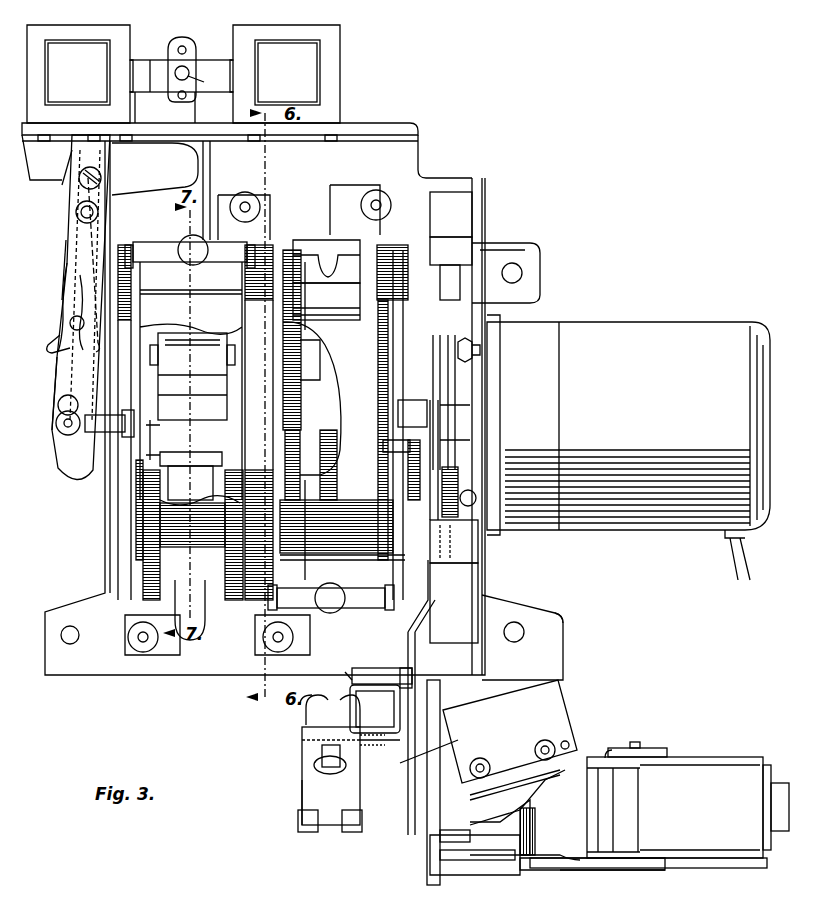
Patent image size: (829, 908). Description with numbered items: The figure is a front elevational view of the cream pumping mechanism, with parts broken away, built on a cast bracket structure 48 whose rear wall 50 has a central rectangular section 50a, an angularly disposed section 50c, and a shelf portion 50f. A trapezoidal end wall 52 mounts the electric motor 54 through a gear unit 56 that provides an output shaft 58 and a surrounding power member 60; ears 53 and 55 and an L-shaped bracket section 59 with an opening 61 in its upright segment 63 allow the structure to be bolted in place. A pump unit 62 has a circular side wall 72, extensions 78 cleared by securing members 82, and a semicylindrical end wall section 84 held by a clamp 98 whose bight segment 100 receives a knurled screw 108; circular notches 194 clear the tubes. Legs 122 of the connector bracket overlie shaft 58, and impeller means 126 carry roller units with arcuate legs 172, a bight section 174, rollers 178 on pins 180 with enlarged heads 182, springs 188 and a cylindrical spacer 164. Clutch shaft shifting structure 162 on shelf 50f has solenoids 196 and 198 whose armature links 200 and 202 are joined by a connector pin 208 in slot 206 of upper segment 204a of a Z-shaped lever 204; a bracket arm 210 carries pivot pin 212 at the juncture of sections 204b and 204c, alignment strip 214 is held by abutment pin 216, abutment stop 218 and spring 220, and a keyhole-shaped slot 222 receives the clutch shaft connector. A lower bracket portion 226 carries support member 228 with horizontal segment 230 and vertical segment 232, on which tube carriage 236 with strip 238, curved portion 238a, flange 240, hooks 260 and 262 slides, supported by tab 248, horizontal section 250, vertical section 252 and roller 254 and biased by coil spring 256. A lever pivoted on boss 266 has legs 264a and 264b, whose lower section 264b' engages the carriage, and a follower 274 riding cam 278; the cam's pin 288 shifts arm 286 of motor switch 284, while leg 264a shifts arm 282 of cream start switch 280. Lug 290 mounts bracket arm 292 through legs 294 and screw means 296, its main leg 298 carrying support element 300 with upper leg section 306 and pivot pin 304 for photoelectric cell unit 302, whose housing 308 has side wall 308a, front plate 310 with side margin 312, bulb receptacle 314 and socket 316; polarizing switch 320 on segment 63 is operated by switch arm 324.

The bracket structure 48 is at (420, 145).
The rear wall 50 is at (470, 293).
The central rectangular section 50a is at (390, 447).
The angularly disposed section 50c is at (400, 548).
The shelf portion 50f is at (226, 141).
The end wall 52 is at (480, 548).
The ear 53 is at (60, 680).
The electric motor 54 is at (662, 328).
The ear 55 is at (515, 245).
The gear unit 56 is at (555, 328).
The output shaft 58 is at (450, 430).
The L-shaped bracket section 59 is at (568, 652).
The power member 60 is at (470, 410).
The opening 61 is at (520, 625).
The pump unit 62 is at (140, 528).
The upright segment 63 is at (555, 625).
The circular side wall 72 is at (135, 552).
The upwardly projecting extension 78 is at (262, 198).
The securing member 82 is at (258, 208).
The semicylindrical end wall section 84 is at (193, 535).
The clamp 98 is at (168, 245).
The main bight segment 100 is at (163, 262).
The screw 108 is at (210, 262).
The leg 122 is at (398, 410).
The impeller means 126 is at (461, 903).
The clutch shaft shifting structure 162 is at (64, 235).
The cylindrical spacer 164 is at (262, 440).
The arcuate leg 172 is at (232, 372).
The bight section 174 is at (100, 497).
The roller 178 is at (192, 376).
The pin 180 is at (150, 462).
The enlarged head 182 is at (172, 322).
The spring 188 is at (225, 462).
The circular notch 194 is at (322, 244).
The solenoid 196 is at (338, 27).
The solenoid 198 is at (122, 26).
The armature link 200 is at (158, 66).
The armature link 202 is at (210, 66).
The Z-shaped lever 204 is at (70, 196).
The upper segment 204a is at (192, 116).
The lever section 204b is at (185, 160).
The lever section 204c is at (60, 380).
The upright slot 206 is at (184, 37).
The connector pin 208 is at (219, 92).
The bracket arm 210 is at (80, 155).
The pivot pin 212 is at (100, 188).
The alignment strip 214 is at (62, 285).
The abutment pin 216 is at (78, 214).
The abutment stop 218 is at (70, 320).
The spring 220 is at (62, 345).
The keyhole-shaped slot 222 is at (66, 440).
The lower horizontal bracket portion 226 is at (358, 668).
The support member 228 is at (347, 675).
The horizontal segment 230 is at (378, 680).
The vertical segment 232 is at (440, 692).
The tube carriage 236 is at (300, 727).
The strip 238 is at (333, 710).
The outermost terminal portion 238a is at (302, 785).
The upstanding flange 240 is at (375, 709).
The L-shaped tab 248 is at (372, 742).
The horizontal section 250 is at (448, 743).
The outer vertical section 252 is at (330, 770).
The roller 254 is at (314, 765).
The coil spring 256 is at (378, 752).
The J-shaped hook 260 is at (350, 832).
The J-shaped hook 262 is at (300, 710).
The leg 264a is at (370, 338).
The leg 264b is at (387, 672).
The lower section 264b' is at (399, 836).
The boss 266 is at (395, 380).
The follower 274 is at (446, 345).
The cam 278 is at (460, 428).
The cream start switch 280 is at (462, 205).
The switch arm 282 is at (448, 275).
The motor switch 284 is at (465, 582).
The switch arm 286 is at (408, 500).
The pin 288 is at (400, 488).
The lug 290 is at (470, 858).
The bracket arm 292 is at (570, 870).
The leg 294 is at (432, 868).
The screw means 296 is at (455, 830).
The main leg 298 is at (620, 870).
The support element 300 is at (655, 748).
The photoelectric cell unit 302 is at (712, 758).
The pivot pin 304 is at (640, 742).
The upper leg section 306 is at (612, 748).
The housing 308 is at (740, 870).
The side wall portion 308a is at (538, 825).
The front plate 310 is at (750, 766).
The side margin 312 is at (642, 818).
The bulb receptacle 314 is at (782, 845).
The socket 316 is at (528, 862).
The polarizing switch 320 is at (560, 690).
The switch arm 324 is at (500, 827).